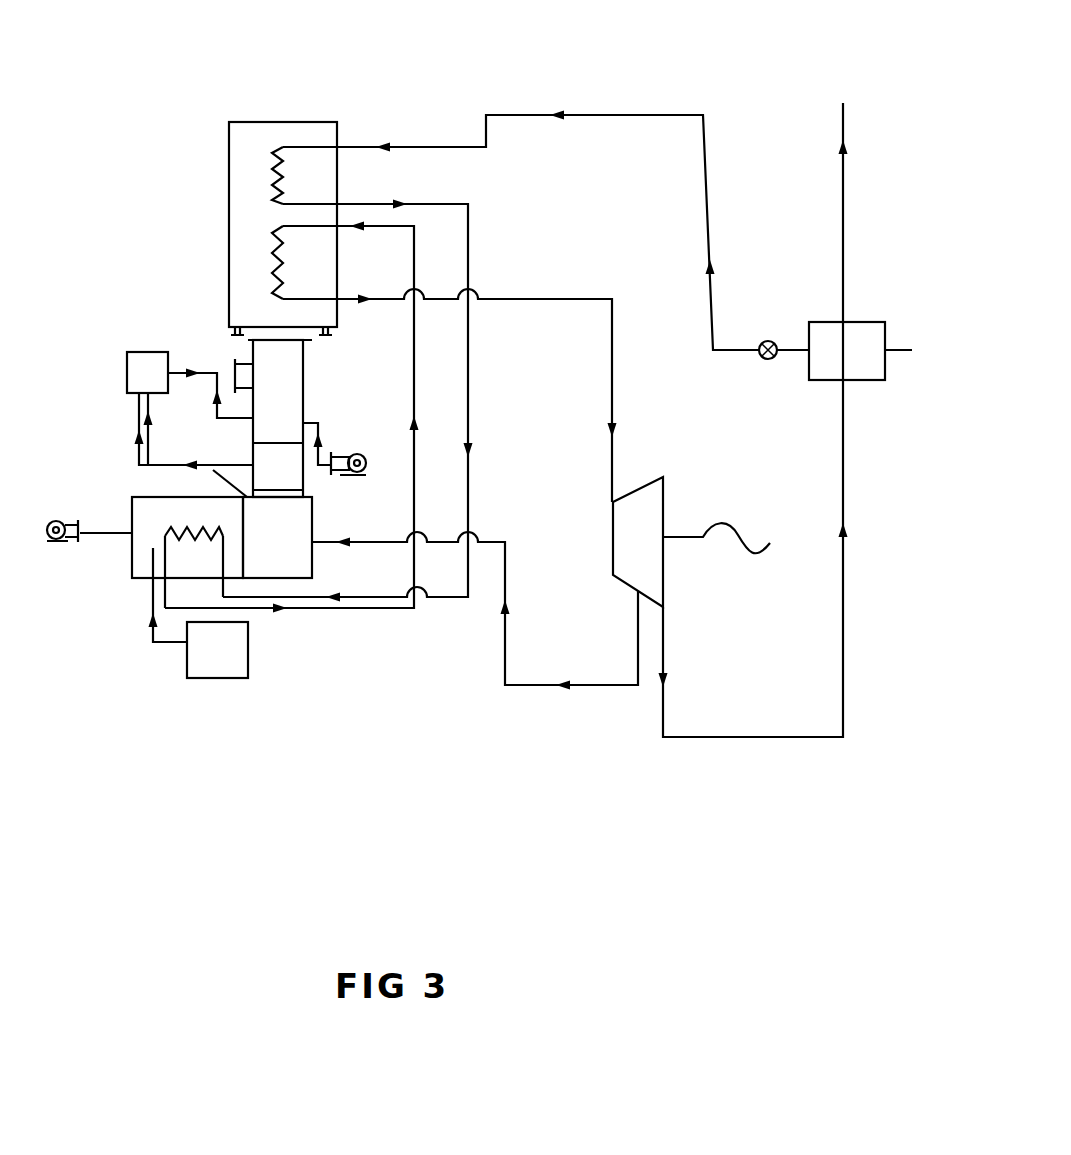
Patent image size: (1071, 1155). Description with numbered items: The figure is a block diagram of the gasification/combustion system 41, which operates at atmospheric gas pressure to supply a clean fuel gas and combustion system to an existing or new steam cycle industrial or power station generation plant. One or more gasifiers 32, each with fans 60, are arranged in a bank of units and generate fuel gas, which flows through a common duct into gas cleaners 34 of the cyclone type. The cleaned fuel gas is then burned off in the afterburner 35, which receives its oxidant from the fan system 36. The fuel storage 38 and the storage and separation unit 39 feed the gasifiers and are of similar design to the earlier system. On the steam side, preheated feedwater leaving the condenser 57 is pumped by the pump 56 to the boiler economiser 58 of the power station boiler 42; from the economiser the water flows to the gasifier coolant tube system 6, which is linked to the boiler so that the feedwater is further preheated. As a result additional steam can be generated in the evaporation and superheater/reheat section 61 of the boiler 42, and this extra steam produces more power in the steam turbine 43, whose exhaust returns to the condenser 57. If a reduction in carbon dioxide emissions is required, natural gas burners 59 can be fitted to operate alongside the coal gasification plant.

The power station boiler 42 is at (253, 115).
The boiler economiser 58 is at (257, 168).
The evaporation and superheater/reheat section 61 is at (258, 255).
The natural gas burners 59 is at (331, 340).
The afterburner 35 is at (307, 379).
The fan system 36 is at (358, 452).
The gas cleaners 34 is at (303, 484).
The gasifiers 32 is at (125, 493).
The gasifier coolant tube system 6 is at (178, 523).
The fans 60 is at (59, 549).
The fuel storage 38 is at (197, 685).
The storage and separation unit 39 is at (138, 345).
The steam turbine 43 is at (670, 480).
The pump 56 is at (768, 339).
The condenser 57 is at (852, 322).
The gasification/combustion system 41 is at (275, 775).